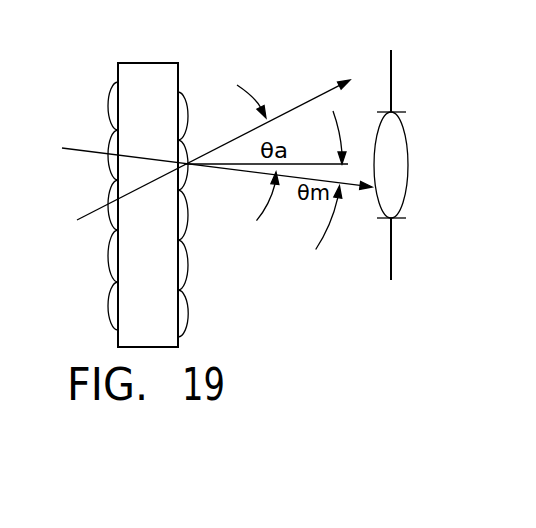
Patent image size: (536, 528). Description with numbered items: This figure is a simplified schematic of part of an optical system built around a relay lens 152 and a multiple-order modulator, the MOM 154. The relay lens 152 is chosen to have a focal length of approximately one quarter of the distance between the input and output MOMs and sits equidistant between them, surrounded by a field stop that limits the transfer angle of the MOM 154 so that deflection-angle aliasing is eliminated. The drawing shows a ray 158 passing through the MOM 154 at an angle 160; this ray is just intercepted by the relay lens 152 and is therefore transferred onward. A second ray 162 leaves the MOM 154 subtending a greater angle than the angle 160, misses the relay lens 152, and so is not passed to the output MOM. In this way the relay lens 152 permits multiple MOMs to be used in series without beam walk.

The relay lens 152 is at (390, 138).
The MOM 154 is at (236, 279).
The ray 158 is at (90, 149).
The angle 160 is at (330, 236).
The ray 162 is at (91, 219).